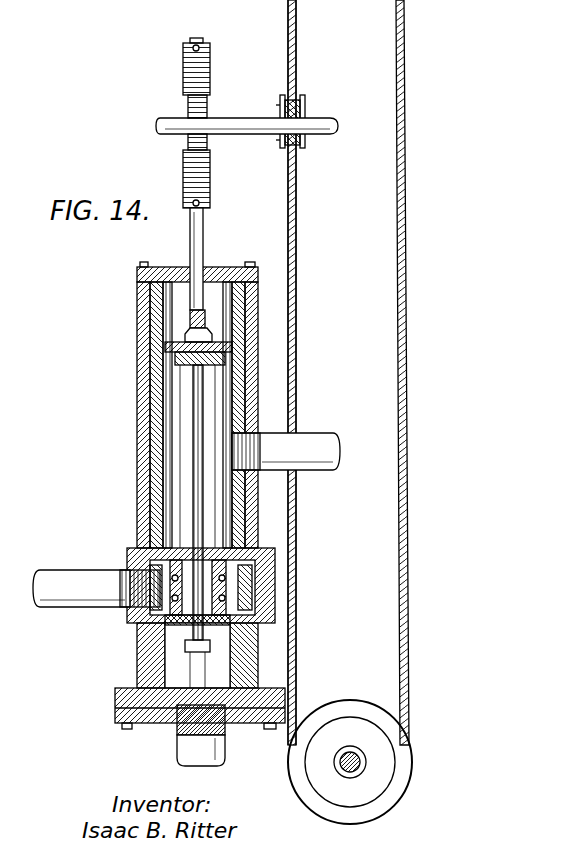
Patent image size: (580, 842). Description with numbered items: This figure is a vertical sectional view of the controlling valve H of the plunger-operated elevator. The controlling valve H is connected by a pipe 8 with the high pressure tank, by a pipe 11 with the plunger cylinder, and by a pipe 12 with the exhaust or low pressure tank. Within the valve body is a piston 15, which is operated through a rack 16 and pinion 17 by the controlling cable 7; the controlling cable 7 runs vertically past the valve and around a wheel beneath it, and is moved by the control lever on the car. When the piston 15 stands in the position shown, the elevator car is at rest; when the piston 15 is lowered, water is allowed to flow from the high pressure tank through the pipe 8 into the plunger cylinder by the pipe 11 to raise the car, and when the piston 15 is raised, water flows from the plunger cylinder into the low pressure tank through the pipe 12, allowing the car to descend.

The controlling cable 7 is at (302, 209).
The pipe 8 is at (322, 440).
The pipe 11 is at (62, 582).
The pipe 12 is at (180, 754).
The piston 15 is at (203, 241).
The rack 16 is at (210, 182).
The pinion 17 is at (208, 112).
The controlling valve H is at (168, 495).